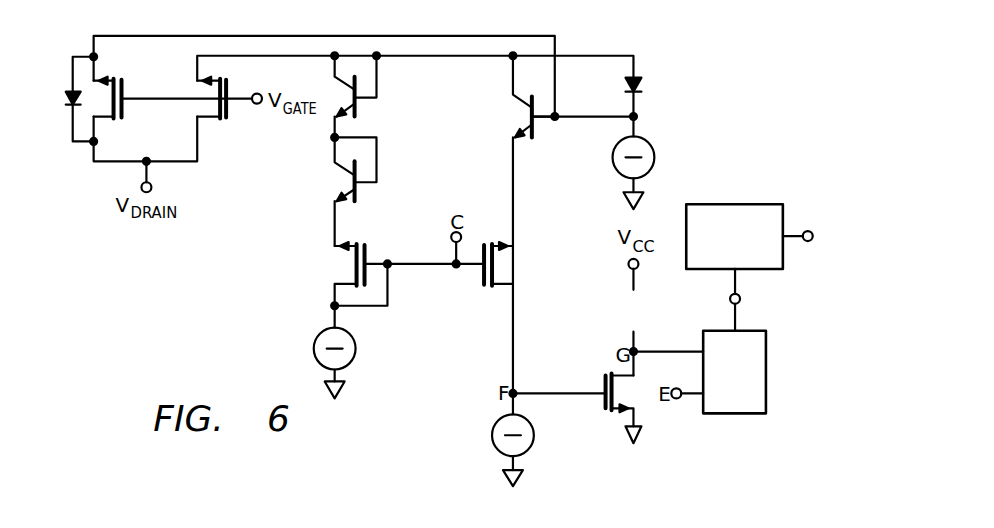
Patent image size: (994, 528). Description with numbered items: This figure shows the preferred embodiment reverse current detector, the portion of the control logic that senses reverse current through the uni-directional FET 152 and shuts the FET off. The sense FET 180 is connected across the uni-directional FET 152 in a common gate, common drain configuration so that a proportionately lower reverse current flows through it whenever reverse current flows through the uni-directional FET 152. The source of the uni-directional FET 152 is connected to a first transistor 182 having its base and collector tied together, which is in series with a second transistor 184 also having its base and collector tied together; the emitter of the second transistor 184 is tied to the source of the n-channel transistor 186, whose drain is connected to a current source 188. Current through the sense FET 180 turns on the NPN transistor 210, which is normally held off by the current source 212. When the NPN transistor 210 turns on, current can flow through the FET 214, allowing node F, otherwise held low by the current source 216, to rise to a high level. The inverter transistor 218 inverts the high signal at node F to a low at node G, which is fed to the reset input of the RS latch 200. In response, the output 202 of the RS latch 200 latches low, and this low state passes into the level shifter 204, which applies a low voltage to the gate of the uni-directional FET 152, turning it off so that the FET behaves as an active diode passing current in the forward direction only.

The sense FET 180 is at (125, 86).
The uni-directional FET 152 is at (230, 112).
The first transistor 182 is at (358, 114).
The second transistor 184 is at (358, 198).
The n-channel transistor 186 is at (367, 250).
The current source 188 is at (313, 350).
The NPN transistor 210 is at (536, 133).
The current source 212 is at (657, 158).
The FET 214 is at (480, 279).
The current source 216 is at (492, 437).
The inverter transistor 218 is at (607, 382).
The RS latch 200 is at (738, 415).
The output 202 is at (742, 300).
The level shifter 204 is at (738, 204).